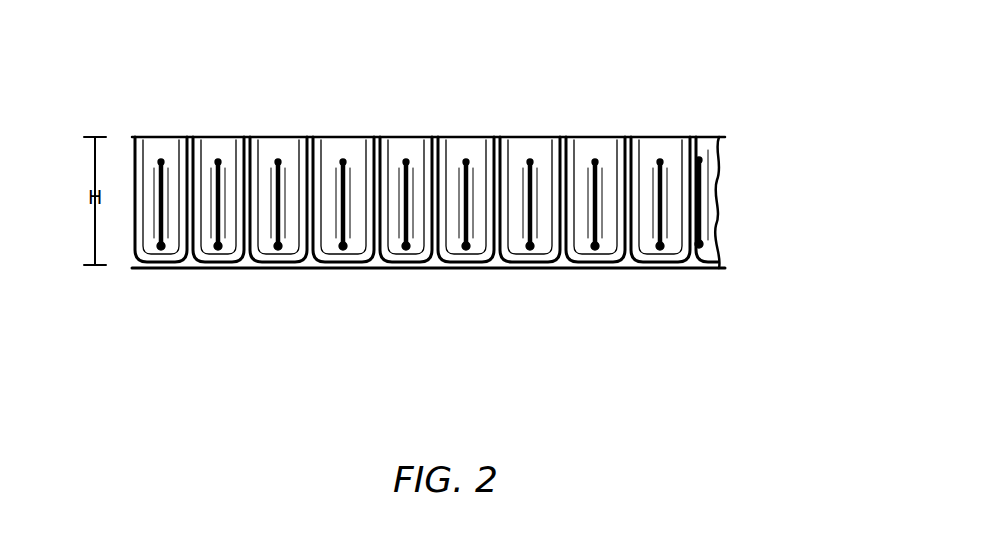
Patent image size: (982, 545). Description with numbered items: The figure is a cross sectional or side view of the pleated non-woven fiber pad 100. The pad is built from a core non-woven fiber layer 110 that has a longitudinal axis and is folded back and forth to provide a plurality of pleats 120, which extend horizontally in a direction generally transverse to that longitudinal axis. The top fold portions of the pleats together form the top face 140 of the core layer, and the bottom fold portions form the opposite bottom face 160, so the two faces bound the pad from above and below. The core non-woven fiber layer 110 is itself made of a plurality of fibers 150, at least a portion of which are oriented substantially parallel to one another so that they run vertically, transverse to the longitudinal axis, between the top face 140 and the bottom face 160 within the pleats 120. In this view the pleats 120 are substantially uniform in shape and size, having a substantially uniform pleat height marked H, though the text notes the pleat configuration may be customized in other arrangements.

The pleated non-woven fiber pad 100 is at (686, 113).
The core non-woven fiber layer 110 is at (343, 268).
The pleats 120 is at (418, 151).
The top face 140 is at (492, 146).
The fibers 150 is at (700, 238).
The bottom face 160 is at (645, 268).